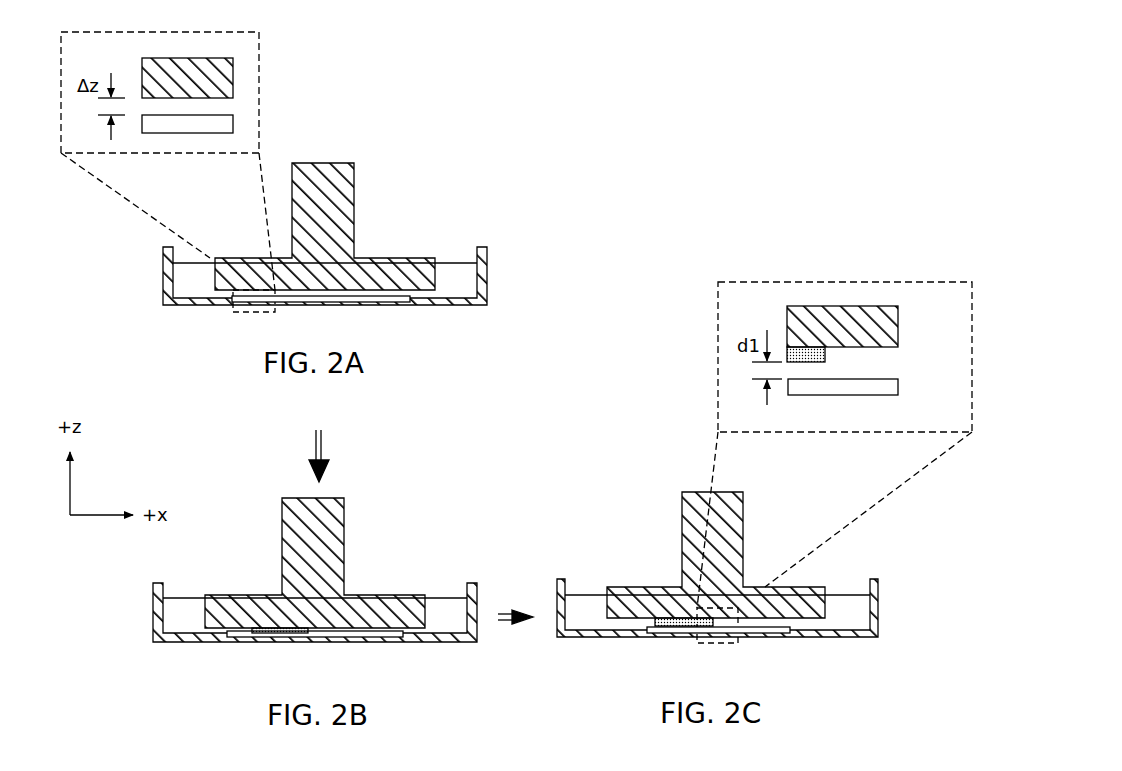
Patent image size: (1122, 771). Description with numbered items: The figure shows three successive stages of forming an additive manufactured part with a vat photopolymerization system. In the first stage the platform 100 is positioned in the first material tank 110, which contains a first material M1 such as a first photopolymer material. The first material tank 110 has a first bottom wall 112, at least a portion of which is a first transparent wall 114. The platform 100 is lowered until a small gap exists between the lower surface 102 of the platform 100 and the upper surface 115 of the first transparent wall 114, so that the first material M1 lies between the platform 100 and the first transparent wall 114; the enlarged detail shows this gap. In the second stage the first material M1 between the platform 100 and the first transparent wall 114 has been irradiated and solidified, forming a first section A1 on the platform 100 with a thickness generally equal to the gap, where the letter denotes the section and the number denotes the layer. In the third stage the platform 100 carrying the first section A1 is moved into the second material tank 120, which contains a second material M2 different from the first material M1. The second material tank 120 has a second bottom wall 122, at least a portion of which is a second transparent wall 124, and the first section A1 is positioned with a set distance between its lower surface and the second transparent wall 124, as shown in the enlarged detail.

In FIG. 2A, the platform 100 is at (391, 255).
In FIG. 2B, the platform 100 is at (385, 592).
In FIG. 2C, the platform 100 is at (790, 582).
In FIG. 2A, the lower surface of the platform 102 is at (153, 98).
In FIG. 2A, the first material tank 110 is at (160, 286).
In FIG. 2B, the first material tank 110 is at (150, 618).
In FIG. 2A, the first bottom wall 112 is at (195, 303).
In FIG. 2B, the first bottom wall 112 is at (183, 640).
In FIG. 2A, the first transparent wall 114 is at (255, 302).
In FIG. 2B, the first transparent wall 114 is at (242, 640).
In FIG. 2A, the upper surface of the first transparent wall 115 is at (227, 115).
In FIG. 2C, the second material tank 120 is at (882, 604).
In FIG. 2C, the second bottom wall 122 is at (595, 640).
In FIG. 2C, the second transparent wall 124 is at (655, 638).
In FIG. 2A, the first material M1 is at (456, 268).
In FIG. 2B, the first material M1 is at (453, 604).
In FIG. 2C, the first material M1 is at (502, 569).
In FIG. 2C, the second material M2 is at (857, 598).
In FIG. 2B, the first section A1 is at (283, 634).
In FIG. 2C, the first section A1 is at (668, 628).